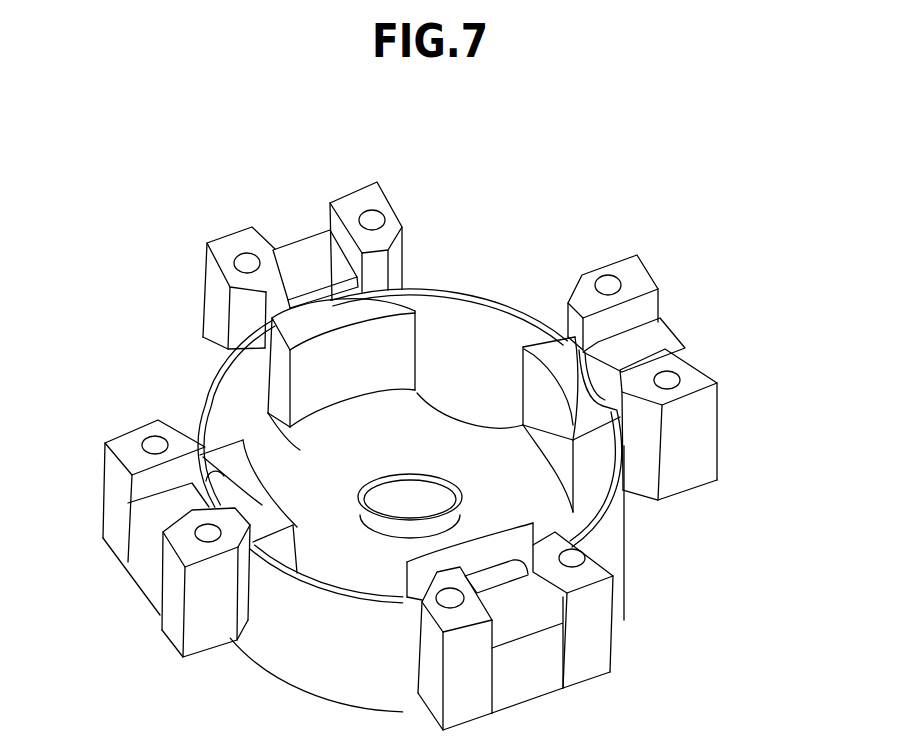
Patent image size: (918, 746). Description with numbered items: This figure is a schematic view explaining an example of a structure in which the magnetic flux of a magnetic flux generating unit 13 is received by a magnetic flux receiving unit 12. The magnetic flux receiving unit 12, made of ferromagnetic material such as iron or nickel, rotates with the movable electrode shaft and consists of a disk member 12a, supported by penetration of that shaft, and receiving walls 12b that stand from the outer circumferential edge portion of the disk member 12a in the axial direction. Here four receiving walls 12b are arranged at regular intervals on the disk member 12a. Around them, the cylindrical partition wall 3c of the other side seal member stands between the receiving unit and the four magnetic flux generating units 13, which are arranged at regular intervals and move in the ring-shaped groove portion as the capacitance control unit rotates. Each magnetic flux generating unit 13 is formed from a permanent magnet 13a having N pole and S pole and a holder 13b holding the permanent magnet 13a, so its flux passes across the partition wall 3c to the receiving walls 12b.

The partition wall 3c is at (610, 542).
The magnetic flux receiving unit 12 is at (787, 440).
The disk member 12a is at (533, 500).
The receiving wall 12b is at (603, 418).
The magnetic flux generating unit 13 is at (238, 133).
The permanent magnet 13a is at (300, 250).
The holder 13b is at (357, 202).